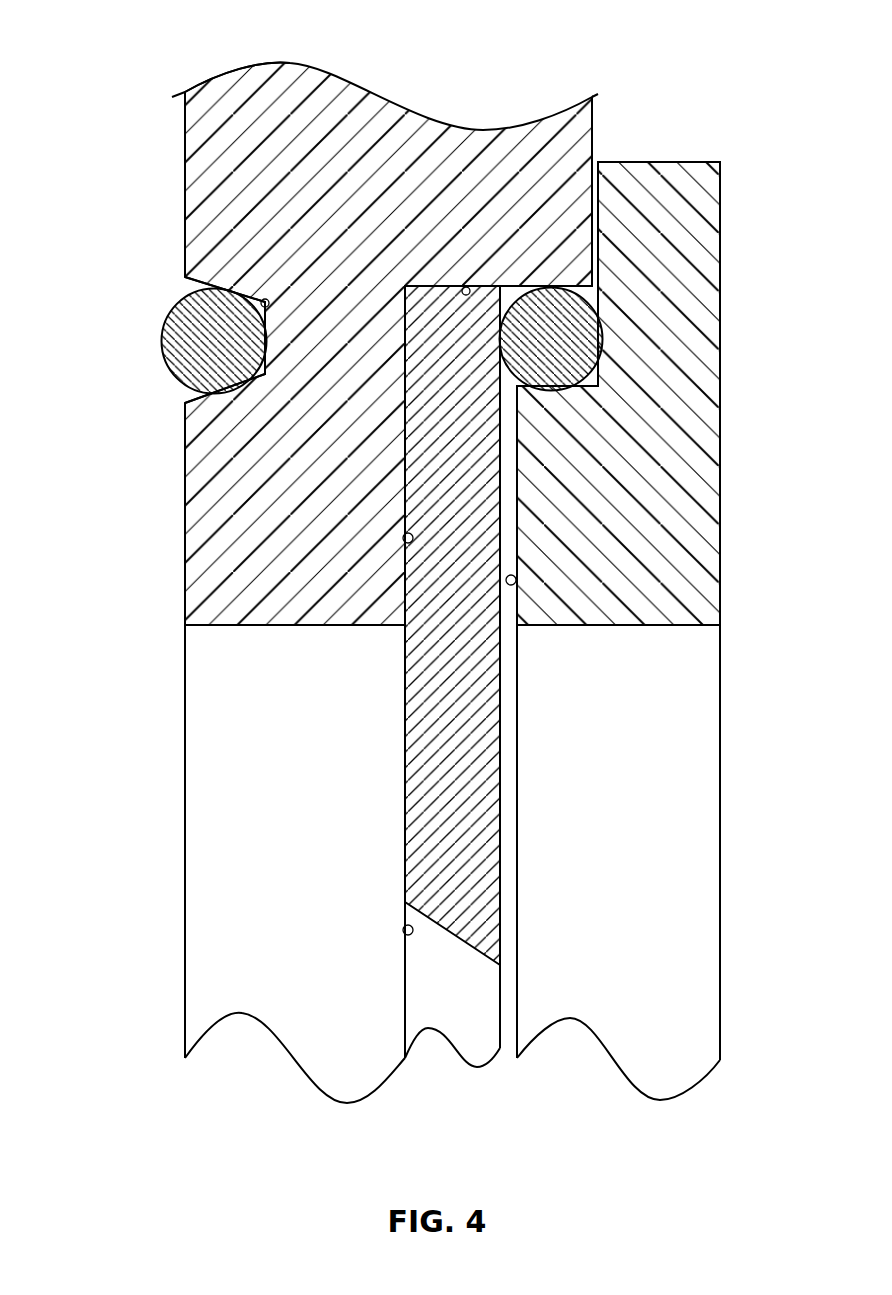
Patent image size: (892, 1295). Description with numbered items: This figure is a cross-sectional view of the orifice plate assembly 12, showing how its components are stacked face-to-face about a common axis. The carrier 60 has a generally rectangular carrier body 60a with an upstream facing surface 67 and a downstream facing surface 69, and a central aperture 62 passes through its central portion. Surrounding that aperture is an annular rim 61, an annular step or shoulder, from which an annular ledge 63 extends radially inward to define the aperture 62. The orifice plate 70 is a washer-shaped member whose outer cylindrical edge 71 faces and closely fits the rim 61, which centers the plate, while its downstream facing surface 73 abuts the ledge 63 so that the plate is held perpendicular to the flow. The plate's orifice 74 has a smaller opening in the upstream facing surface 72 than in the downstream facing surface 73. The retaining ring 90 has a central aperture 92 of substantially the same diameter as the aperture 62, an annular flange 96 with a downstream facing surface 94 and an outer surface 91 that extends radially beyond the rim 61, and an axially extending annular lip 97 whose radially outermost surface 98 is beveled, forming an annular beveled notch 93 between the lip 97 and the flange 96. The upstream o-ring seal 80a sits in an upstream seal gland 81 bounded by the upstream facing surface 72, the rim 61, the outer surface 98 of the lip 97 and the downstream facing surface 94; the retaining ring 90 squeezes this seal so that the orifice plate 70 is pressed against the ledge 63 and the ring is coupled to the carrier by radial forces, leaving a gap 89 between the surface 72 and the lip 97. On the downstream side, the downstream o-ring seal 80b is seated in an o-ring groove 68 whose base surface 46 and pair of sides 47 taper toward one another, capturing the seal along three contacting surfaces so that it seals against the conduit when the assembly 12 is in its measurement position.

The orifice plate assembly 12 is at (685, 54).
The carrier 60 is at (185, 170).
The carrier body 60a is at (185, 114).
The groove sides 47 is at (182, 291).
The groove base surface 46 is at (270, 303).
The downstream o-ring seal 80b is at (170, 332).
The o-ring groove 68 is at (183, 393).
The annular rim 61 is at (425, 284).
The outer cylindrical edge 71 is at (466, 287).
The annular ledge 63 is at (403, 539).
The downstream facing surface of carrier 69 is at (184, 712).
The central aperture of carrier 62 is at (195, 1012).
The orifice plate 70 is at (419, 829).
The downstream facing surface of orifice plate 73 is at (403, 770).
The upstream facing surface of carrier 67 is at (403, 930).
The orifice 74 is at (457, 1036).
The upstream facing surface of orifice plate 72 is at (505, 853).
The retaining ring 90 is at (713, 535).
The annular flange 96 is at (708, 228).
The upstream seal gland 81 is at (590, 292).
The upstream o-ring seal 80a is at (592, 322).
The annular beveled notch 93 is at (590, 384).
The outermost surface of lip 98 is at (552, 390).
The annular lip 97 is at (550, 505).
The downstream facing surface of flange 94 is at (516, 580).
The sleeve outer surface 91 is at (720, 587).
The central aperture of retaining ring 92 is at (707, 965).
The gap 89 is at (507, 1058).